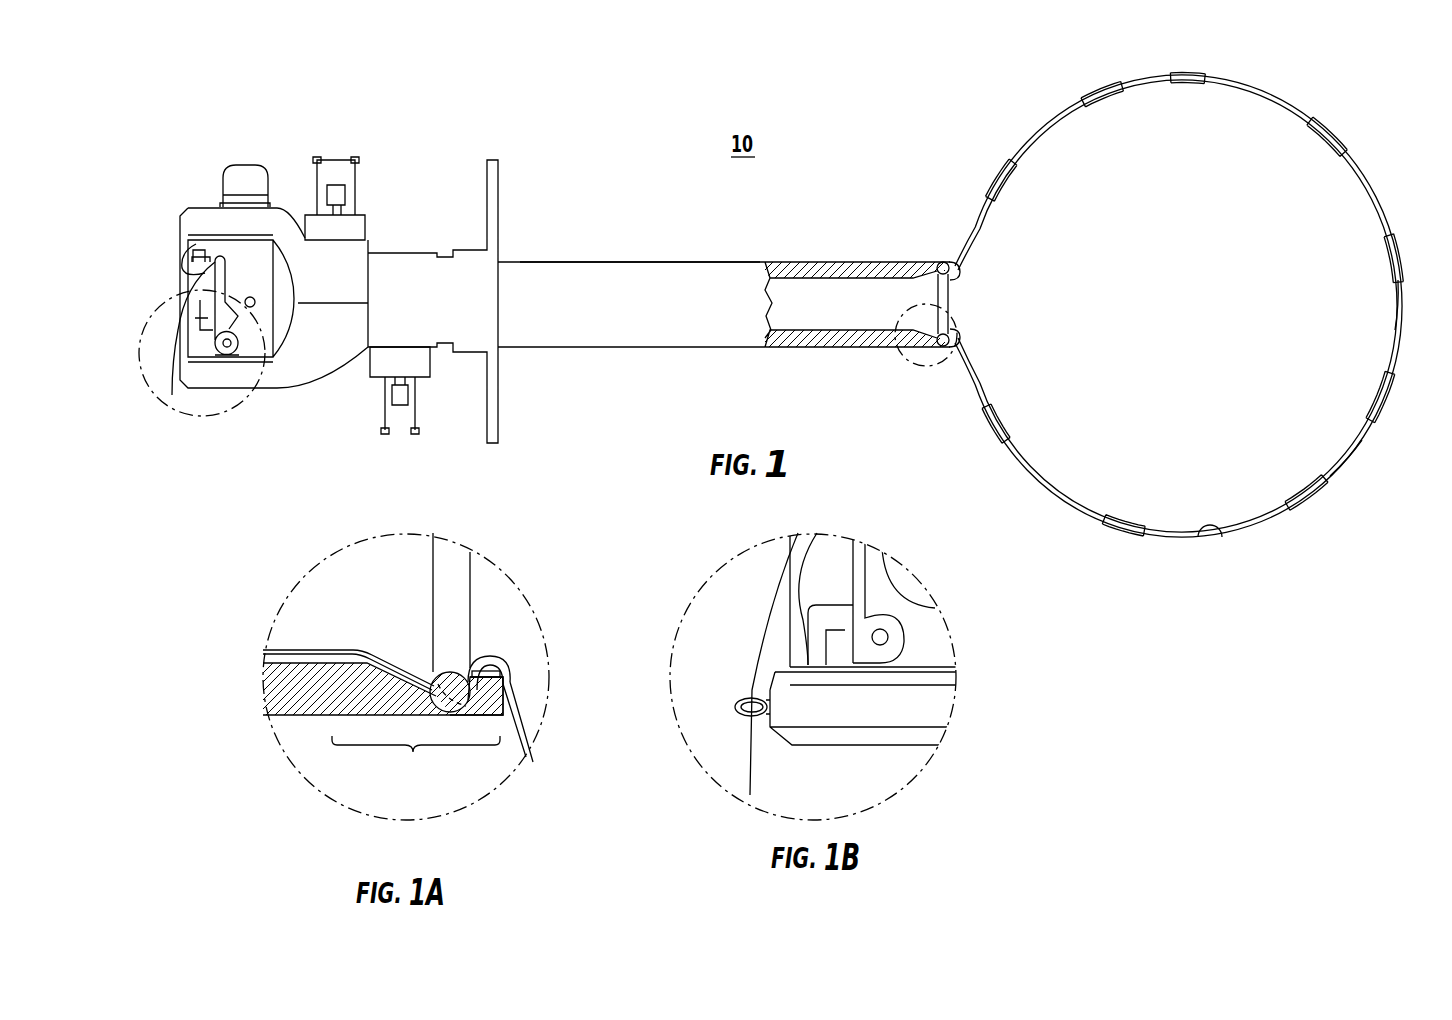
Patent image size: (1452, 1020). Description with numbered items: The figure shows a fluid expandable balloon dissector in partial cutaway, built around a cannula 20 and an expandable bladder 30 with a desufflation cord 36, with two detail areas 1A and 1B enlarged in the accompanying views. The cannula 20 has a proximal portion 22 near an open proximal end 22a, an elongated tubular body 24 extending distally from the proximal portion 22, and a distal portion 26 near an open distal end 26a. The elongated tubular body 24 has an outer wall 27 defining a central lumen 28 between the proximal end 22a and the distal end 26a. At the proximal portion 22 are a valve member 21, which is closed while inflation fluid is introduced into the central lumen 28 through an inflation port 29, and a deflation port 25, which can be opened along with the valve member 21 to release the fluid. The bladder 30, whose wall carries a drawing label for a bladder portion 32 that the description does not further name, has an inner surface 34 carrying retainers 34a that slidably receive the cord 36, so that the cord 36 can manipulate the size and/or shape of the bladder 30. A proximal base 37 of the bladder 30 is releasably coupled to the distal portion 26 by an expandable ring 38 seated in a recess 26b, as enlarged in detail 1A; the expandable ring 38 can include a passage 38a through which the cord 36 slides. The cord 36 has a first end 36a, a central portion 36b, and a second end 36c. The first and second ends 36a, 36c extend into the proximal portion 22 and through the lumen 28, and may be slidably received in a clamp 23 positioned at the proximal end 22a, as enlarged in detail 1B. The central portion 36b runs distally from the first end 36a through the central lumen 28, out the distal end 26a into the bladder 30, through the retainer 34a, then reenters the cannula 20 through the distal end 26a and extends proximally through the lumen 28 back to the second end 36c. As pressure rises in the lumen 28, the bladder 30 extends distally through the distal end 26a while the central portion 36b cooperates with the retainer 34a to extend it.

In FIG. 1, the cannula 20 is at (621, 231).
In FIG. 1, the valve member 21 is at (258, 332).
In FIG. 1, the proximal portion 22 is at (485, 100).
In FIG. 1, the open proximal end 22a is at (198, 302).
In FIG. 1B, the clamp 23 is at (735, 707).
In FIG. 1, the elongated tubular body 24 is at (693, 280).
In FIG. 1, the deflation port 25 is at (357, 177).
In FIG. 1, the distal portion 26 is at (996, 148).
In FIG. 1A, the distal portion 26 is at (413, 752).
In FIG. 1, the open distal end 26a is at (952, 295).
In FIG. 1A, the recess 26b is at (450, 708).
In FIG. 1, the outer wall 27 is at (800, 272).
In FIG. 1A, the outer wall 27 is at (323, 707).
In FIG. 1, the central lumen 28 is at (860, 315).
In FIG. 1A, the central lumen 28 is at (416, 618).
In FIG. 1, the inflation port 29 is at (386, 410).
In FIG. 1, the expandable bladder 30 is at (1258, 90).
In FIG. 1, the ring inner band 32 is at (1072, 511).
In FIG. 1, the inner surface 34 is at (1209, 532).
In FIG. 1A, the inner surface 34 is at (523, 720).
In FIG. 1, the retainers 34a is at (1396, 237).
In FIG. 1, the cord 36 is at (1405, 327).
In FIG. 1A, the cord 36 is at (292, 652).
In FIG. 1, the first end 36a is at (180, 253).
In FIG. 1, the central portion 36b is at (1360, 447).
In FIG. 1, the second end 36c is at (175, 357).
In FIG. 1B, the second end 36c is at (752, 768).
In FIG. 1, the proximal base 37 is at (978, 280).
In FIG. 1A, the proximal base 37 is at (493, 667).
In FIG. 1A, the expandable ring 38 is at (456, 712).
In FIG. 1A, the passage 38a is at (480, 684).
In FIG. 1, the detail area 1A is at (922, 372).
In FIG. 1, the detail area 1B is at (218, 424).